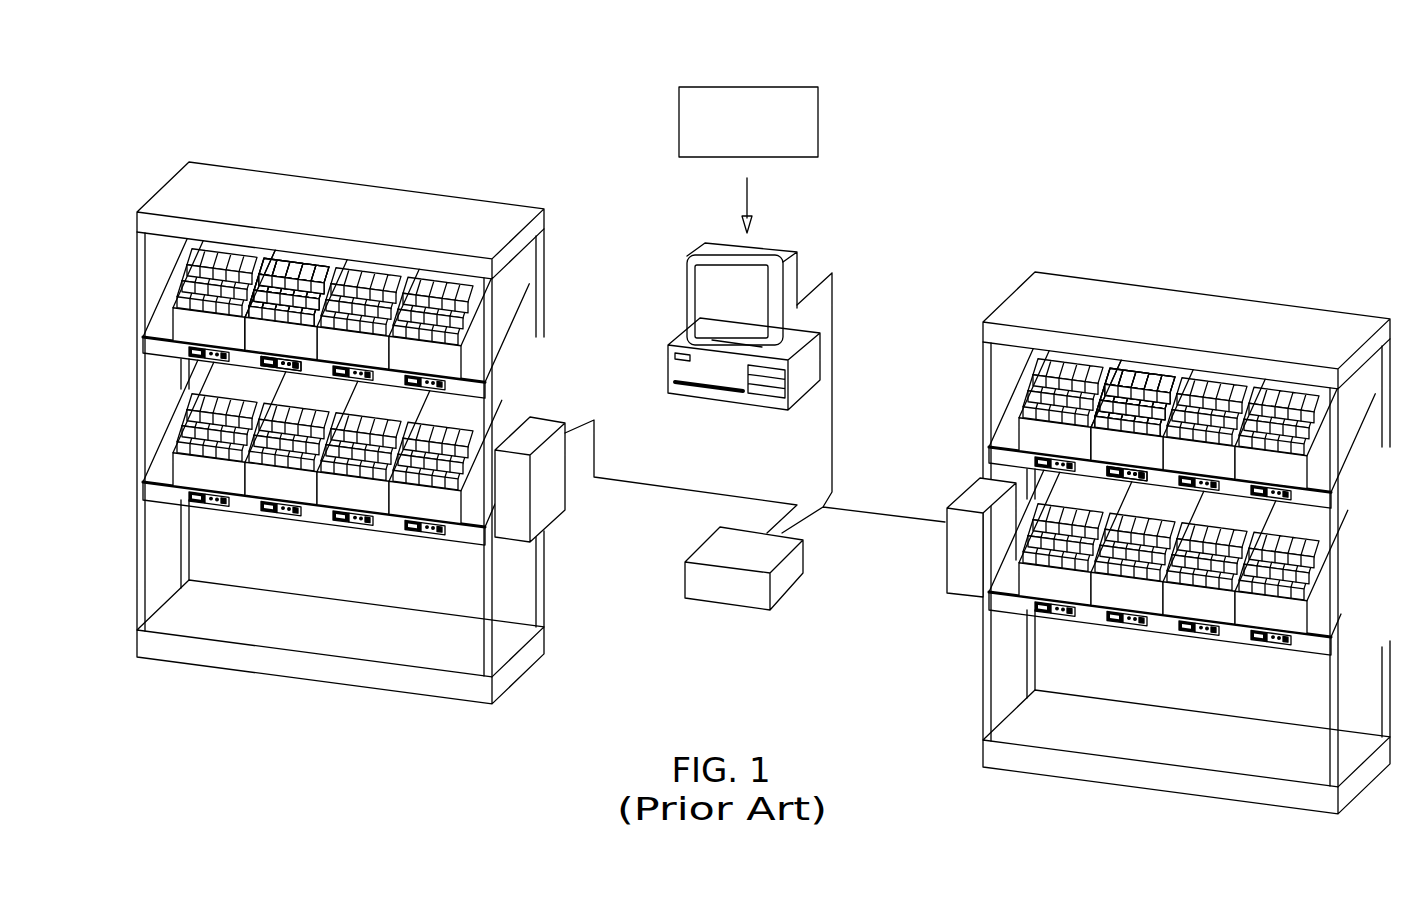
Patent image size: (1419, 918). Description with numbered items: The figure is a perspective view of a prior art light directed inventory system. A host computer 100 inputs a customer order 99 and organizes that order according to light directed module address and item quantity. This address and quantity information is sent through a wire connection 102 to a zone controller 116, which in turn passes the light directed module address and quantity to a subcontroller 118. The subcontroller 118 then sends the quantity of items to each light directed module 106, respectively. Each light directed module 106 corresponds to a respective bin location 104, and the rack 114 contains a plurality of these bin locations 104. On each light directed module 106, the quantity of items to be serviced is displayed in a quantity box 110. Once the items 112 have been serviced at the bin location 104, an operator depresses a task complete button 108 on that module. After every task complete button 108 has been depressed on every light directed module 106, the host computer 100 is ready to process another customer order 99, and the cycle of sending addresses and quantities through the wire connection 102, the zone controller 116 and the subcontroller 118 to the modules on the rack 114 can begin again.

The customer order 99 is at (818, 108).
The host computer 100 is at (772, 302).
The wire connection 102 is at (833, 393).
The bin location 104 is at (300, 318).
The light directed module 106 is at (268, 357).
The task complete button 108 is at (290, 353).
The quantity box 110 is at (275, 332).
The items 112 is at (291, 300).
The rack 114 is at (556, 285).
The zone controller 116 is at (733, 607).
The subcontroller 118 is at (550, 522).